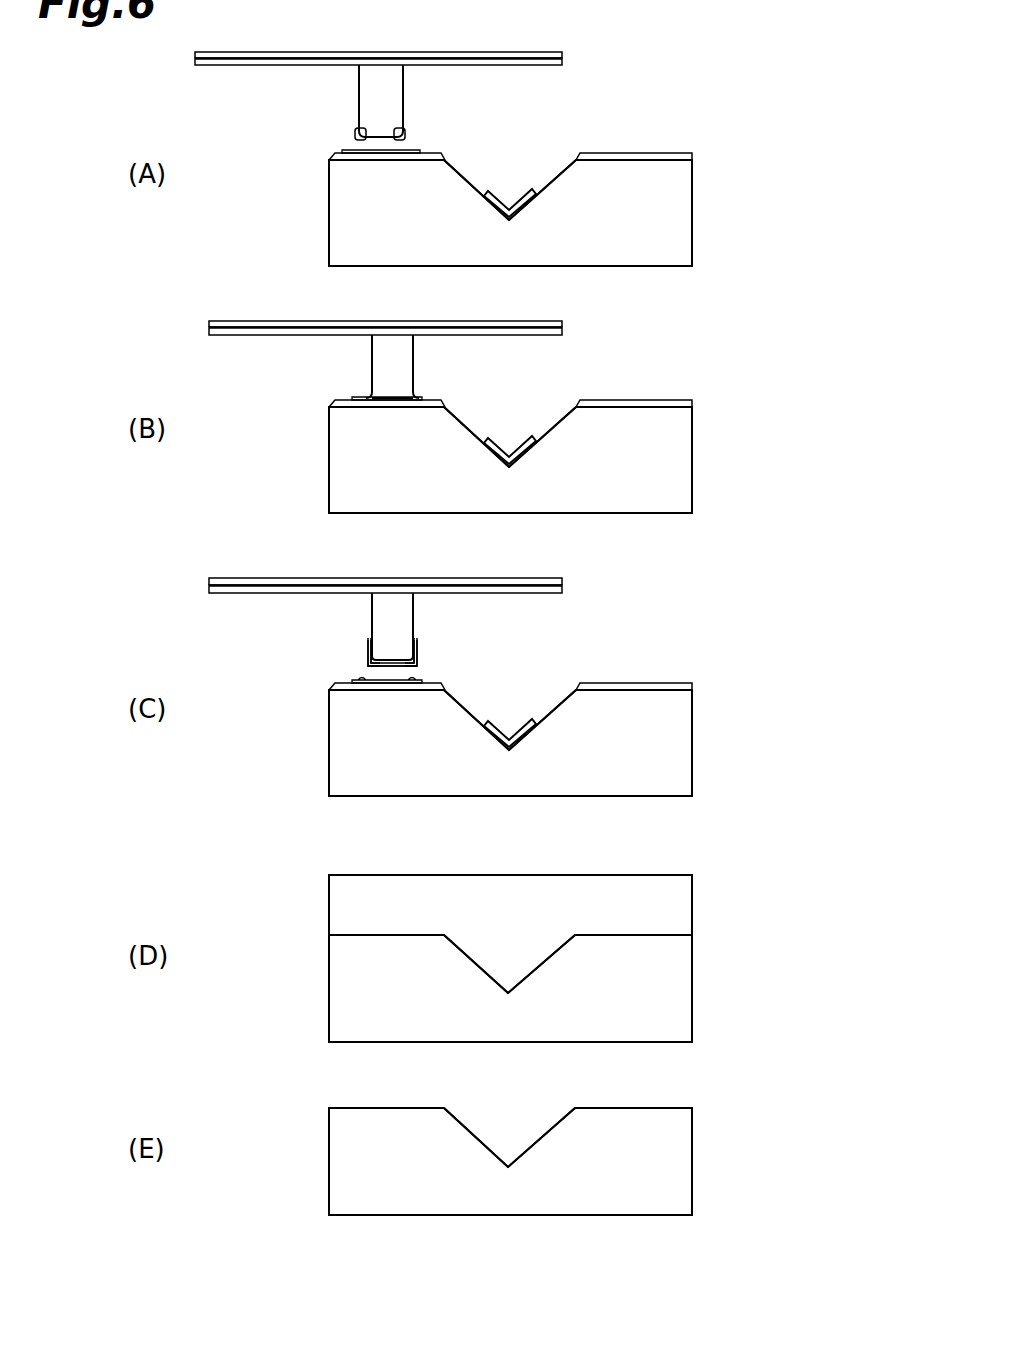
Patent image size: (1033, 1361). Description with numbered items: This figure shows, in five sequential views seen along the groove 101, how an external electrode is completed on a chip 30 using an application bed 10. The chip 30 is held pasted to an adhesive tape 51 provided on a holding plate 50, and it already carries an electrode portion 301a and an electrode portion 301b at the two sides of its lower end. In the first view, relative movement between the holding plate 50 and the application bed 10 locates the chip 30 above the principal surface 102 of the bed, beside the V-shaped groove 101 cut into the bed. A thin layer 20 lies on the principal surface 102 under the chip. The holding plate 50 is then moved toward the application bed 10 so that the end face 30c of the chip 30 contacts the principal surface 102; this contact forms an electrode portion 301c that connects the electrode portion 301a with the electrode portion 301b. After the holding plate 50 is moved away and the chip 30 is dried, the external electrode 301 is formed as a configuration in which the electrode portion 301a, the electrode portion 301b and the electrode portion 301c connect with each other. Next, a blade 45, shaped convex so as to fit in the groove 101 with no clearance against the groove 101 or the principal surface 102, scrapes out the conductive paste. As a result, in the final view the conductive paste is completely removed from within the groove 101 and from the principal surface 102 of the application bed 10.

The application bed 10 is at (682, 230).
The bonding layer 20 is at (357, 152).
The chip 30 is at (396, 95).
The end face of the chip 30c is at (384, 140).
The blade 45 is at (677, 903).
The holding plate 50 is at (563, 54).
The adhesive tape 51 is at (563, 62).
The groove 101 is at (552, 182).
The principal surface 102 is at (333, 166).
The external electrode 301 is at (416, 652).
The electrode portion 301a is at (356, 130).
The electrode portion 301b is at (410, 136).
The electrode portion 301c is at (390, 668).